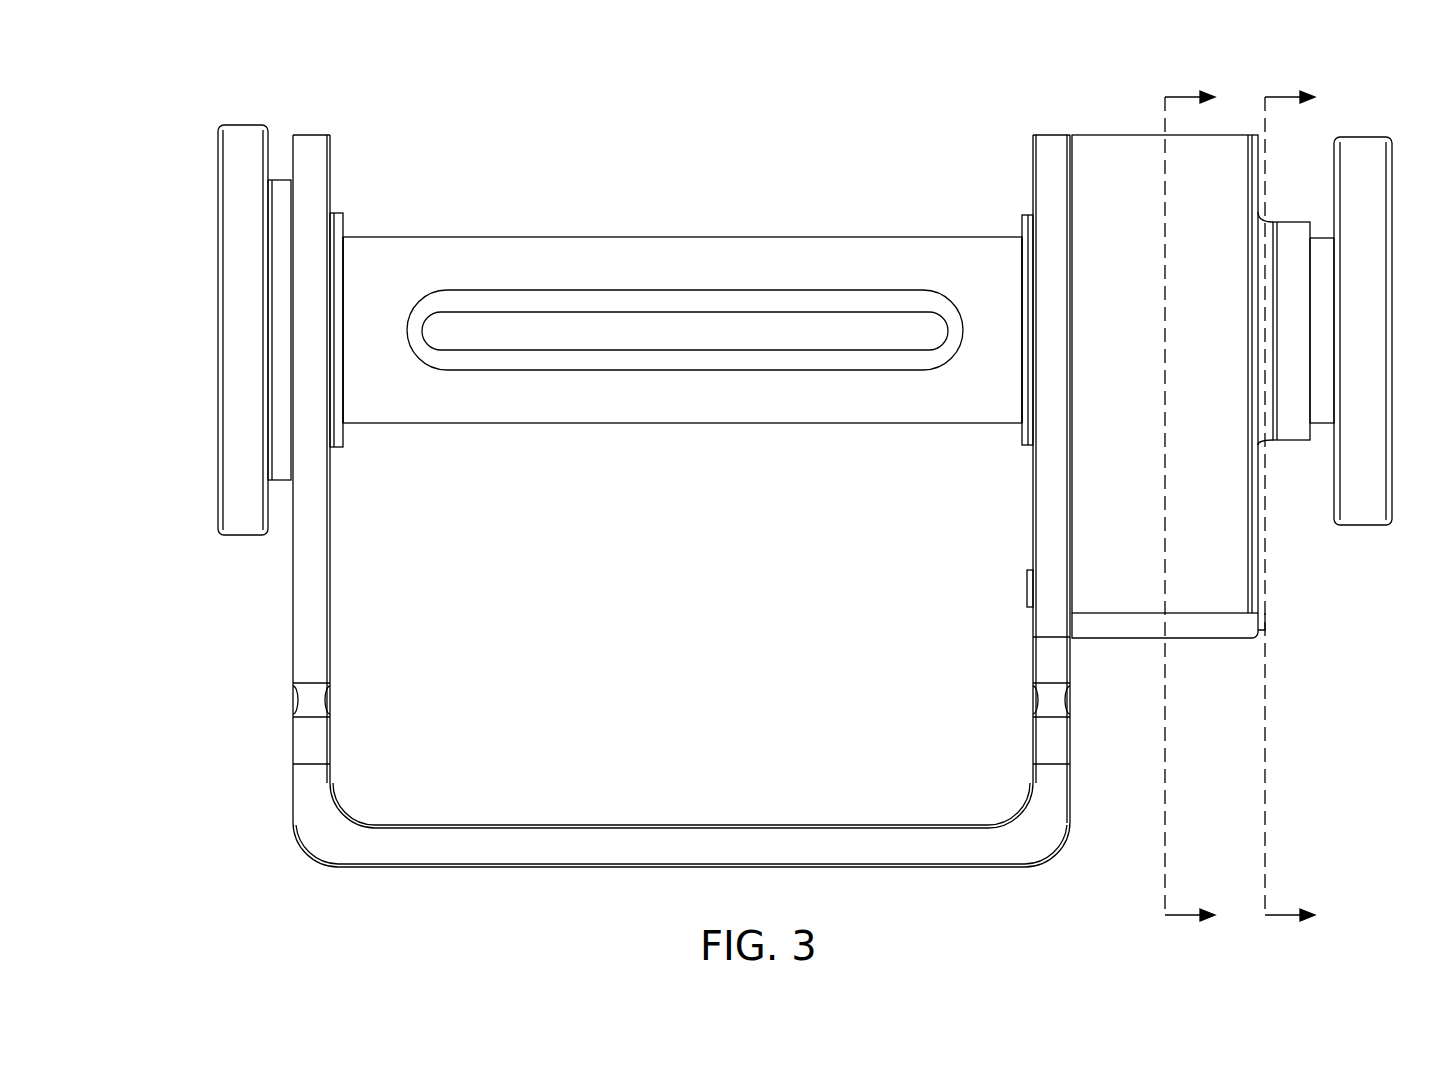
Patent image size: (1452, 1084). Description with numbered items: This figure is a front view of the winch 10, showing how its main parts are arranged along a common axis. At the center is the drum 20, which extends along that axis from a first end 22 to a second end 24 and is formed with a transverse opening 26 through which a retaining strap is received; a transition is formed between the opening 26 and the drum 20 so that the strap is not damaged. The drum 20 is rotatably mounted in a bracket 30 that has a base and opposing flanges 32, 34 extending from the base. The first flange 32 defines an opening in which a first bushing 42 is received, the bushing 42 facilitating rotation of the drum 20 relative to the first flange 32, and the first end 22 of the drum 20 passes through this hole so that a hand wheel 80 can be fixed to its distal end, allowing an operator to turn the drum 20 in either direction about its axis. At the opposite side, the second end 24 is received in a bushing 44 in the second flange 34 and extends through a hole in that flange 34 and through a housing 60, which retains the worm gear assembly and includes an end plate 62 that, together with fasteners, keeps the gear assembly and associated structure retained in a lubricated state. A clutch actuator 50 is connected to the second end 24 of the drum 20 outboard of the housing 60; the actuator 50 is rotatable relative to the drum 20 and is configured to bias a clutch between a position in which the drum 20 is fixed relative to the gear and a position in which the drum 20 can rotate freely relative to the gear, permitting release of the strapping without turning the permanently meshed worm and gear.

The winch 10 is at (188, 122).
The drum 20 is at (718, 242).
The first end 22 is at (343, 237).
The second end 24 is at (1022, 236).
The transverse opening 26 is at (813, 333).
The bracket 30 is at (848, 852).
The first flange 32 is at (308, 617).
The second flange 34 is at (1050, 528).
The first bushing 42 is at (280, 212).
The bushing 44 is at (1022, 445).
The clutch actuator 50 is at (1375, 248).
The housing 60 is at (1110, 120).
The end plate 62 is at (1285, 228).
The hand wheel 80 is at (218, 443).